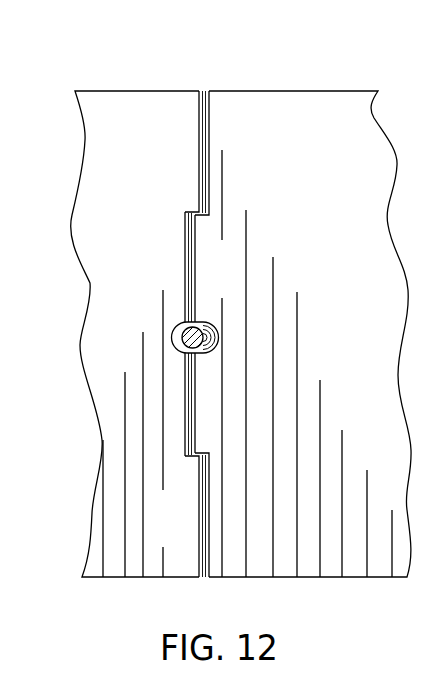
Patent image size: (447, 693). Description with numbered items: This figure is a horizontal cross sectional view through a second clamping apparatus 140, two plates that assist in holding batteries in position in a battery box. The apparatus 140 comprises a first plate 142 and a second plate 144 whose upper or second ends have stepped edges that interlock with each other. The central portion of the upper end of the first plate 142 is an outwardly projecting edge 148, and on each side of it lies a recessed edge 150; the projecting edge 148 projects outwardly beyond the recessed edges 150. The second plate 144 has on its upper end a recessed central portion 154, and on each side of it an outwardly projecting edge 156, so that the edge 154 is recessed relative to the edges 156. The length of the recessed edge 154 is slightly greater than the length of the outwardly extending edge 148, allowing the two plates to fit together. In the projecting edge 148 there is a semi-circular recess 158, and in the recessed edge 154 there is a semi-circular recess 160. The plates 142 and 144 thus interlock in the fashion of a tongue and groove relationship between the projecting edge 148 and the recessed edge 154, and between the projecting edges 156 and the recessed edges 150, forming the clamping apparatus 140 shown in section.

The second clamping apparatus 140 is at (192, 315).
The first plate 142 is at (327, 285).
The second plate 144 is at (142, 233).
The outwardly projecting edge 148 is at (196, 255).
The recessed edge 150 is at (209, 138).
The recessed central portion 154 is at (185, 263).
The outwardly projecting edge 156 is at (199, 150).
The semi-circular recess 158 is at (214, 352).
The semi-circular recess 160 is at (172, 329).